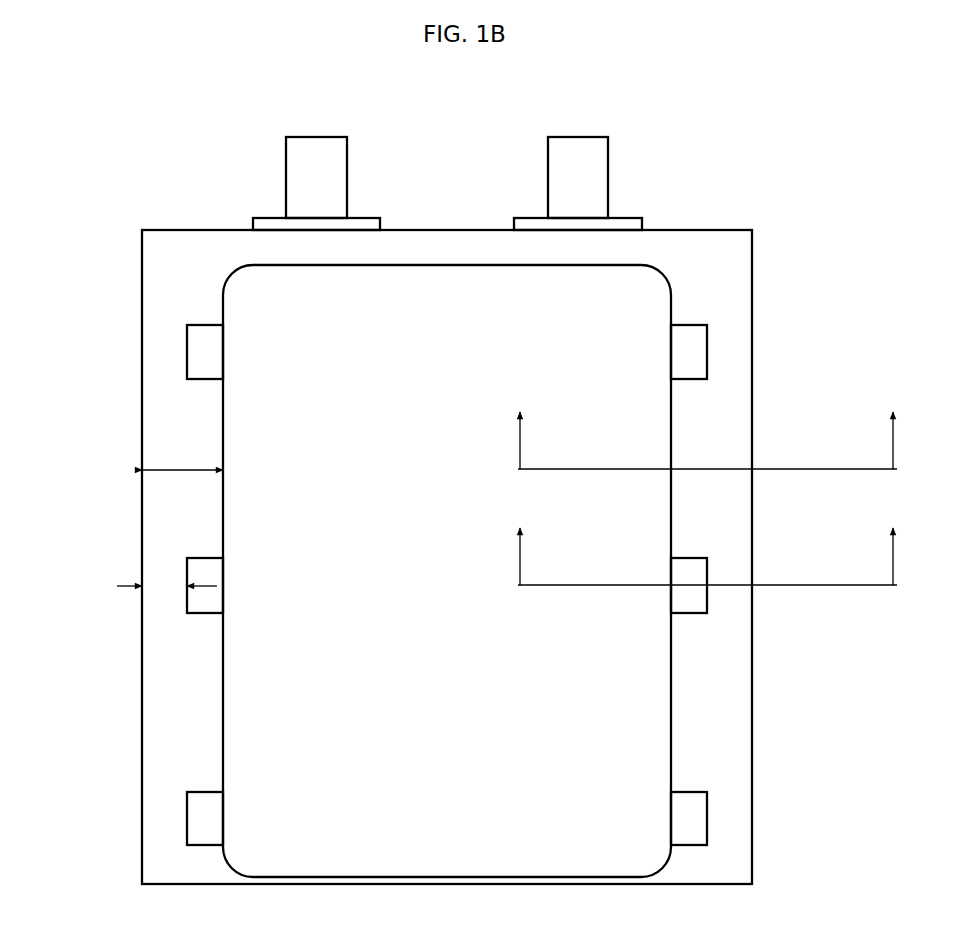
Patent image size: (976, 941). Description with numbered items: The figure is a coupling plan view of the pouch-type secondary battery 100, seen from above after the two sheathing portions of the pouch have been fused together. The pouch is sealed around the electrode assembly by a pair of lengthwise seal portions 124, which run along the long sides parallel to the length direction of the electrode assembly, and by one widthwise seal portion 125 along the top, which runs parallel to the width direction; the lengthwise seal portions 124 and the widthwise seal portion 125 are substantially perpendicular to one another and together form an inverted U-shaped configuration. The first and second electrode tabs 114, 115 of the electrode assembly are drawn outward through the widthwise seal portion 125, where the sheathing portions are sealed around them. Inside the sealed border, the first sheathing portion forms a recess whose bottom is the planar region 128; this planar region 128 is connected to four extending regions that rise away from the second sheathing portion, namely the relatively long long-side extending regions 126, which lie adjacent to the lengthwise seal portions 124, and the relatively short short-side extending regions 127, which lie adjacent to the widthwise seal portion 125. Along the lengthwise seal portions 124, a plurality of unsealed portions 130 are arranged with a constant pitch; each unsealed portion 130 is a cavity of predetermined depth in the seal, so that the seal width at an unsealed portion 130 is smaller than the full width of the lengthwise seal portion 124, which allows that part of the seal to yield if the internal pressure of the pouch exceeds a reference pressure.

The secondary battery 100 is at (82, 133).
The first electrode tab 114 is at (313, 147).
The second electrode tab 115 is at (578, 147).
The lengthwise seal portion 124 is at (726, 671).
The widthwise seal portion 125 is at (605, 245).
The long-side extending region 126 is at (223, 703).
The short-side extending region 127 is at (447, 266).
The planar region 128 is at (468, 573).
The unsealed portion 130 is at (187, 352).